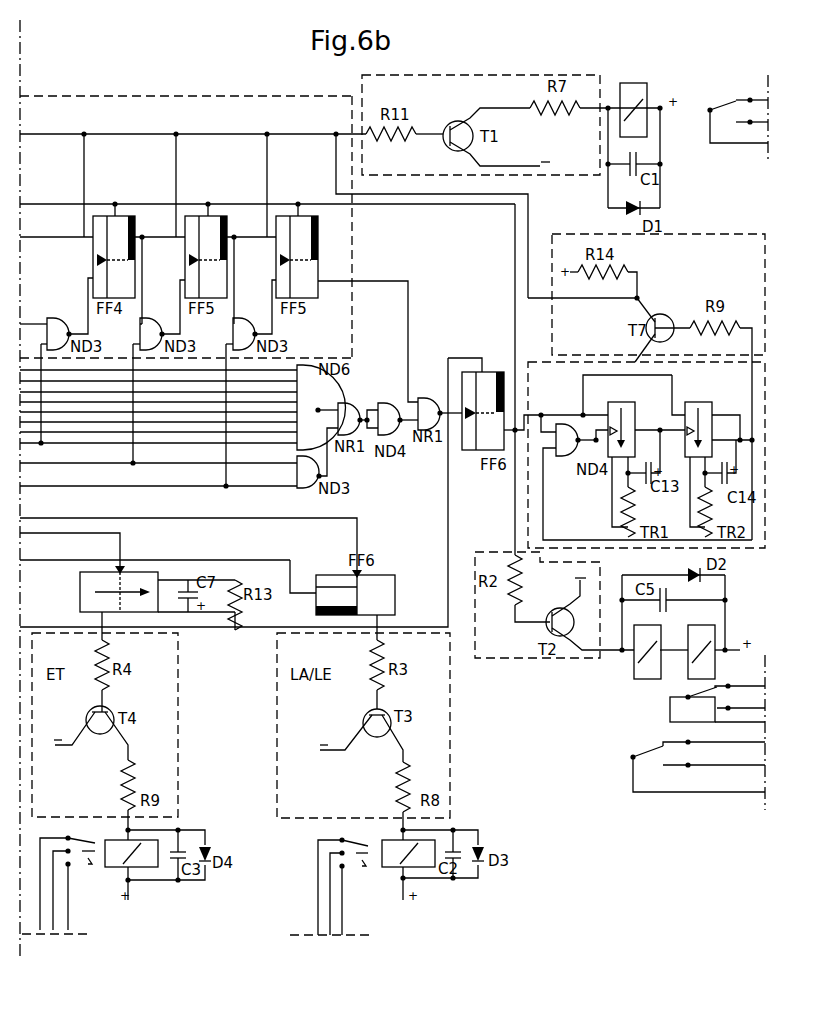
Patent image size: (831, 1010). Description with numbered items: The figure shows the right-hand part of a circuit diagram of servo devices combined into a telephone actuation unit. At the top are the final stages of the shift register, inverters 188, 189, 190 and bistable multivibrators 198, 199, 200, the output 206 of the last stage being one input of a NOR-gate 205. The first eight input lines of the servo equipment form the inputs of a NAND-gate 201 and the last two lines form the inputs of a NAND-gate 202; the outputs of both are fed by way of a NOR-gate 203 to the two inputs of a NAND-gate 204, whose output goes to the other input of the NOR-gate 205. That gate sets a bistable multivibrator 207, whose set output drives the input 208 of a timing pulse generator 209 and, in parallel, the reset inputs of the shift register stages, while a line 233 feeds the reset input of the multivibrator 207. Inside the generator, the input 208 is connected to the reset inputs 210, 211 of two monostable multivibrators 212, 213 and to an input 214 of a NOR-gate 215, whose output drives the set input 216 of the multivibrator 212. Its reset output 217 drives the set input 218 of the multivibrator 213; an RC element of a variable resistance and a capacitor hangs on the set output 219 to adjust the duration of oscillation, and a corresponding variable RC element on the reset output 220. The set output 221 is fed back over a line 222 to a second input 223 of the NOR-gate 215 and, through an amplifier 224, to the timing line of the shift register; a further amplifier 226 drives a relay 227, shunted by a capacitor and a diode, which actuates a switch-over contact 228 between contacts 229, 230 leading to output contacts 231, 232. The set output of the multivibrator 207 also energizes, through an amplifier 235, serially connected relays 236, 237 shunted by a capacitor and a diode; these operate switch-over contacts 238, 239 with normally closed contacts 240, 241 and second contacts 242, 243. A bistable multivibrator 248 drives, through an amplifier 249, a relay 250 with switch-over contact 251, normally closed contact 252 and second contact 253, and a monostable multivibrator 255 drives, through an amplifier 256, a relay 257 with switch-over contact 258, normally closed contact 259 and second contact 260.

The inverter 188 is at (62, 312).
The inverter 189 is at (155, 312).
The inverter 190 is at (247, 312).
The bistable multivibrator 198 is at (94, 276).
The bistable multivibrator 199 is at (186, 276).
The bistable multivibrator 200 is at (276, 276).
The NAND-gate 201 is at (314, 402).
The NAND-gate 202 is at (298, 492).
The NOR-gate 203 is at (348, 403).
The NAND-gate 204 is at (386, 403).
The NOR-gate 205 is at (424, 398).
The output of the last stage of the shift register 206 is at (384, 281).
The bistable multivibrator 207 is at (466, 450).
The input of the timing pulse generator 208 is at (538, 408).
The timing pulse generator 209 is at (542, 372).
The reset input 210 is at (590, 412).
The reset input 211 is at (672, 396).
The monostable multivibrator 212 is at (622, 410).
The monostable multivibrator 213 is at (693, 410).
The input of the NOR-gate 214 is at (547, 414).
The NOR-gate 215 is at (586, 429).
The set input 216 is at (596, 442).
The reset output 217 is at (660, 431).
The set input 218 is at (650, 491).
The set output 219 is at (643, 458).
The reset output 220 is at (729, 412).
The set output 221 is at (733, 432).
The line 222 is at (575, 540).
The second input of the NOR-gate 223 is at (560, 456).
The amplifier 224 is at (709, 234).
The further amplifier 226 is at (360, 86).
The relay 227 is at (642, 92).
The switch-over contact 228 is at (712, 104).
The contact 229 is at (750, 100).
The contact 230 is at (722, 143).
The output contact 231 is at (753, 114).
The output contact 232 is at (752, 126).
The line 233 is at (450, 497).
The amplifier 235 is at (476, 658).
The relay 236 is at (637, 668).
The relay 237 is at (700, 643).
The switch-over contact 238 is at (633, 760).
The switch-over contact 239 is at (717, 704).
The normally closed contact 240 is at (714, 735).
The normally closed contact 241 is at (738, 686).
The second contact 242 is at (714, 758).
The second contact 243 is at (741, 700).
The bistable multivibrator 248 is at (386, 598).
The amplifier 249 is at (276, 760).
The relay 250 is at (394, 864).
The switch-over contact 251 is at (360, 858).
The normally closed contact 252 is at (343, 876).
The second contact 253 is at (350, 868).
The monostable multivibrator 255 is at (80, 600).
The amplifier 256 is at (178, 700).
The relay 257 is at (118, 864).
The switch-over contact 258 is at (82, 858).
The normally closed contact 259 is at (68, 874).
The second contact 260 is at (72, 868).